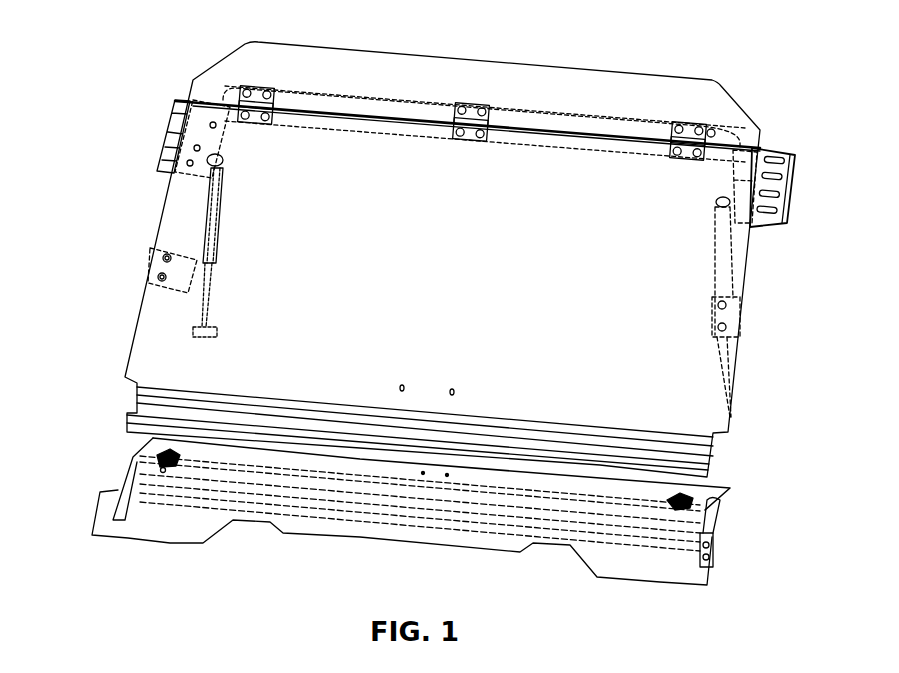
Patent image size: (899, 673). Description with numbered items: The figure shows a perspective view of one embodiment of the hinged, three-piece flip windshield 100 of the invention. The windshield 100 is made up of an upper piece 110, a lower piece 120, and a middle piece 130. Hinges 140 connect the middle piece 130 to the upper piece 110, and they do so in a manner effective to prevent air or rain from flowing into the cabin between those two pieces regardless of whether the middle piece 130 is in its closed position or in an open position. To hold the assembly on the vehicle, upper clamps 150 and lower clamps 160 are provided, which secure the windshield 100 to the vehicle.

The windshield 100 is at (160, 60).
The upper piece 110 is at (532, 90).
The lower piece 120 is at (145, 520).
The middle piece 130 is at (277, 287).
The hinges 140 is at (273, 87).
The upper clamps 150 is at (790, 213).
The lower clamps 160 is at (715, 528).